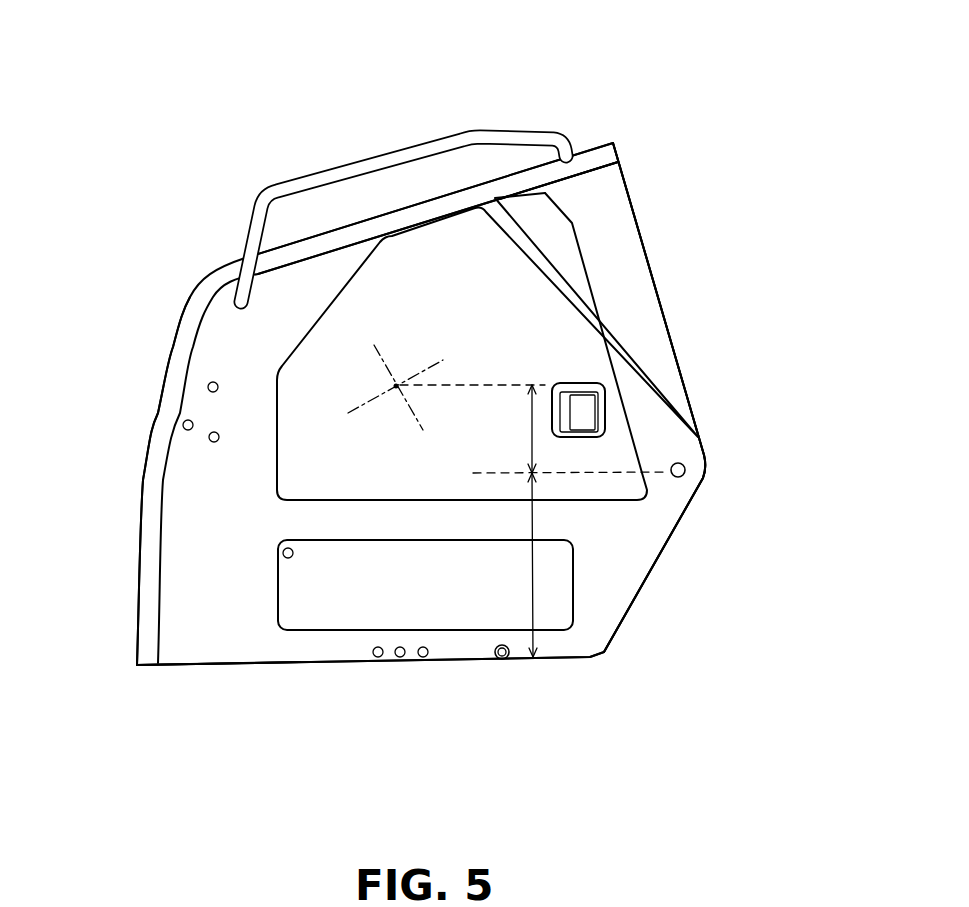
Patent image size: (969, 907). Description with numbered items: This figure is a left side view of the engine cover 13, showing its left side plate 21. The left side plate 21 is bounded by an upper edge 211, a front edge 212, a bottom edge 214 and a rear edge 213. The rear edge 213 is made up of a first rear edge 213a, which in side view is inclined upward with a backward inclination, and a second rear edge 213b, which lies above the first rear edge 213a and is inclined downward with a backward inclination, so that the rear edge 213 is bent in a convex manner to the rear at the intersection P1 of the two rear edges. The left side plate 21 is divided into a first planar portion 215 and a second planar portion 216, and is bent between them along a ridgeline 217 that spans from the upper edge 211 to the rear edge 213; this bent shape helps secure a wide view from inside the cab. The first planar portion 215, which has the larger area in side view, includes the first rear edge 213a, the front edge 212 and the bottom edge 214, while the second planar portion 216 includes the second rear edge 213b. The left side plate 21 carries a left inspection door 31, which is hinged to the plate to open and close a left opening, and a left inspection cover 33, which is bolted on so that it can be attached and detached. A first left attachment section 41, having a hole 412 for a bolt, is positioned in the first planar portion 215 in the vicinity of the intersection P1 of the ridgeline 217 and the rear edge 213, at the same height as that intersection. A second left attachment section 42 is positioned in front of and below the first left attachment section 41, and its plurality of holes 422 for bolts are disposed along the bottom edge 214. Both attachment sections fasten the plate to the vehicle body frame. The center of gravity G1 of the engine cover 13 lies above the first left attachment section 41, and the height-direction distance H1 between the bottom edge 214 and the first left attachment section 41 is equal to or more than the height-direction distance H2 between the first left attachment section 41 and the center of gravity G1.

The engine cover 13 is at (250, 122).
The left side plate 21 is at (210, 527).
The upper edge 211 is at (378, 215).
The front edge 212 is at (143, 472).
The rear edge 213 is at (686, 381).
The first rear edge 213a is at (657, 560).
The second rear edge 213b is at (655, 272).
The bottom edge 214 is at (343, 663).
The first planar portion 215 is at (235, 610).
The second planar portion 216 is at (607, 232).
The ridgeline 217 is at (633, 360).
The left inspection door 31 is at (303, 397).
The left inspection cover 33 is at (455, 595).
The first left attachment section 41 is at (687, 460).
The hole 412 is at (678, 478).
The second left attachment section 42 is at (428, 665).
The holes 422 is at (400, 657).
The center of gravity G1 is at (397, 380).
The intersection P1 is at (705, 470).
The distance H1 is at (511, 560).
The distance H2 is at (534, 433).